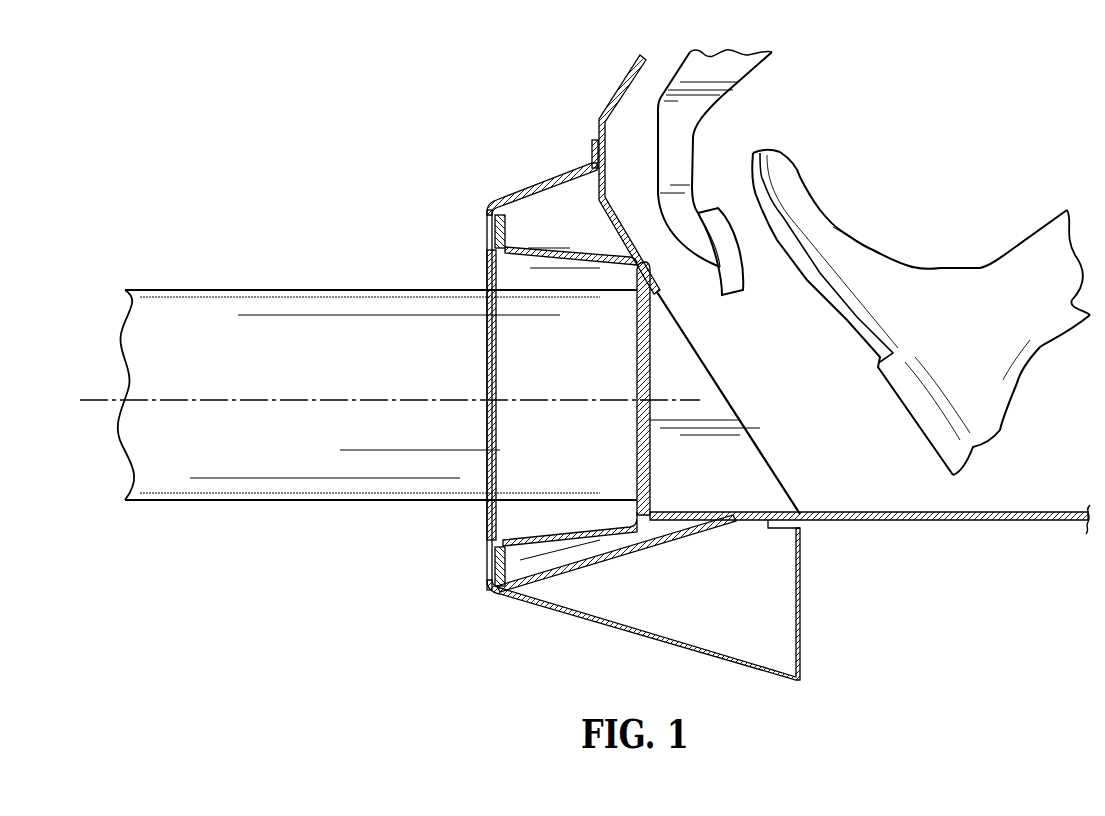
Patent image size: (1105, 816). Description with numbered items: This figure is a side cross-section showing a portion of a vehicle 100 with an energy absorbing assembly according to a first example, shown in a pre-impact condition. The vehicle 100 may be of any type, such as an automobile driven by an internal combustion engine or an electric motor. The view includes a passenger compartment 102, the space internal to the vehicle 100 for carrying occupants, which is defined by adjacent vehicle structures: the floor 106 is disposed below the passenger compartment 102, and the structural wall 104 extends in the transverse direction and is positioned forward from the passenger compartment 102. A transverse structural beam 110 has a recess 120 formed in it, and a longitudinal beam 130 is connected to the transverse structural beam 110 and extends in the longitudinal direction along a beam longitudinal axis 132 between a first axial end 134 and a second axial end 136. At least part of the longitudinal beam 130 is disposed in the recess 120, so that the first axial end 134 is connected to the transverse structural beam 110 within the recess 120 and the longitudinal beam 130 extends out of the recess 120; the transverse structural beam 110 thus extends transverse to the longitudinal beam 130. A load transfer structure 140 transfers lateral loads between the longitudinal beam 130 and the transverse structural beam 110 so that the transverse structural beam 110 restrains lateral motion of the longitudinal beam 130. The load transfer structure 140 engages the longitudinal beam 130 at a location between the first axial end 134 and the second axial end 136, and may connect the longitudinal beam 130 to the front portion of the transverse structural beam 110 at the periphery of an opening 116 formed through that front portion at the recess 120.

The vehicle 100 is at (288, 138).
The passenger compartment 102 is at (915, 89).
The structural wall 104 is at (624, 79).
The floor 106 is at (1040, 511).
The transverse structural beam 110 is at (524, 189).
The opening 116 is at (490, 554).
The recess 120 is at (512, 272).
The longitudinal beam 130 is at (213, 289).
The beam longitudinal axis 132 is at (87, 399).
The first axial end 134 is at (650, 333).
The second axial end 136 is at (124, 313).
The load transfer structure 140 is at (490, 507).